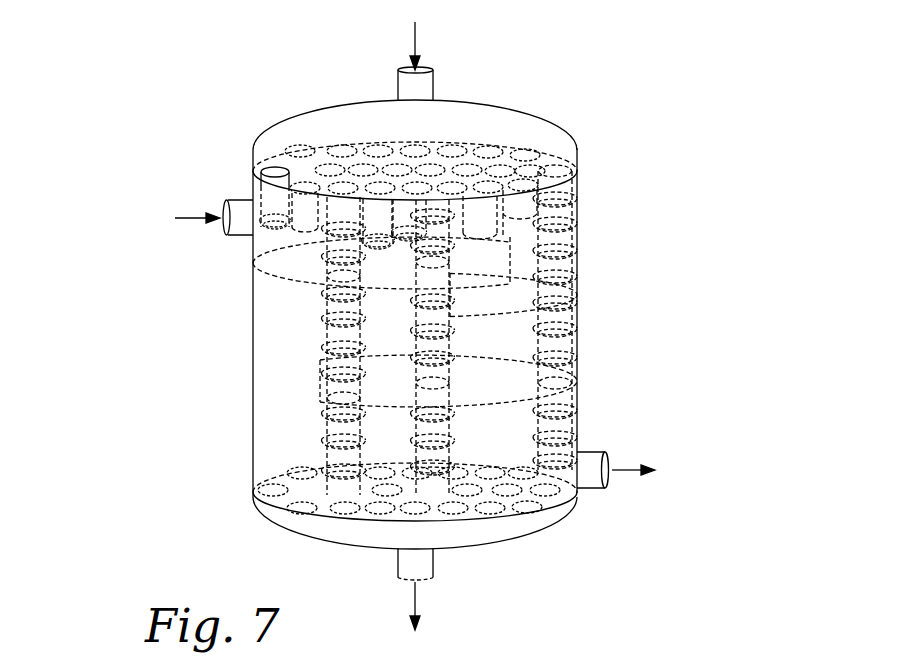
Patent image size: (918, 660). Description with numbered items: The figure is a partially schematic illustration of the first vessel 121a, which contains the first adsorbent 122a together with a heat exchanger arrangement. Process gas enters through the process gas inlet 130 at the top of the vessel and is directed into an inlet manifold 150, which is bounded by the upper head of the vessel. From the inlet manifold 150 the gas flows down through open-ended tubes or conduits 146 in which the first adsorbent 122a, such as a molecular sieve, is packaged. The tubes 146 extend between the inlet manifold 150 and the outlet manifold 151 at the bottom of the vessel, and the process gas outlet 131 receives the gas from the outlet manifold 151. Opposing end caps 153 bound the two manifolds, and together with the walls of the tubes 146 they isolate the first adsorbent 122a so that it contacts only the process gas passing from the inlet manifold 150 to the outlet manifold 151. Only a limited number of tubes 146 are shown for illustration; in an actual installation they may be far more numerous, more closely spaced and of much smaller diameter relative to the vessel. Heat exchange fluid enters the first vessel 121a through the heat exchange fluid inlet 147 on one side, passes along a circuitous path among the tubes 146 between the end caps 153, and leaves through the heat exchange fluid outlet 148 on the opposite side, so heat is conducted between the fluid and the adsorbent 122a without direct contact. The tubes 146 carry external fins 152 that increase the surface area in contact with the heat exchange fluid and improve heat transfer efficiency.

The first vessel 121a is at (254, 420).
The first adsorbent 122a is at (577, 160).
The process gas inlet 130 is at (398, 86).
The process gas outlet 131 is at (404, 562).
The tubes 146 is at (572, 318).
The heat exchange fluid inlet 147 is at (228, 200).
The heat exchange fluid outlet 148 is at (598, 451).
The inlet manifold 150 is at (550, 132).
The outlet manifold 151 is at (320, 527).
The external fins 152 is at (578, 270).
The end caps 153 is at (312, 202).